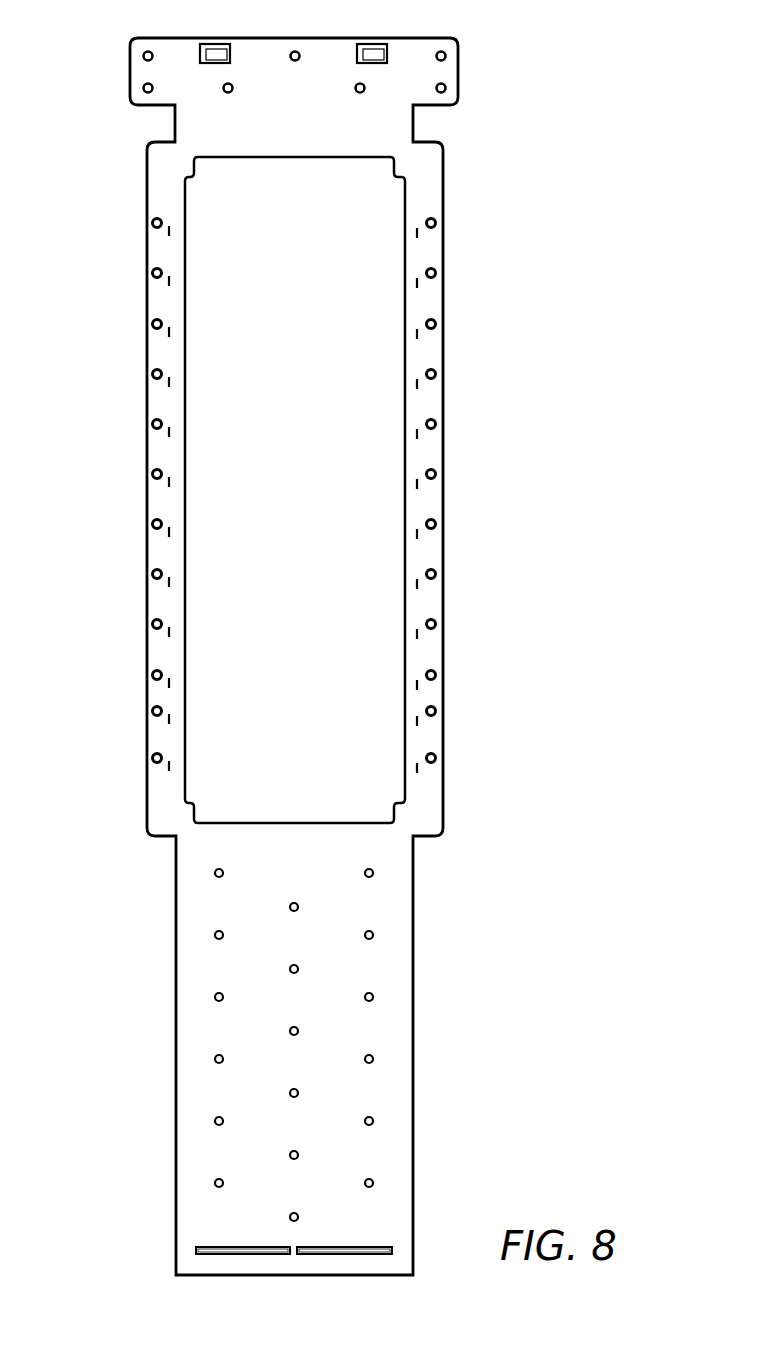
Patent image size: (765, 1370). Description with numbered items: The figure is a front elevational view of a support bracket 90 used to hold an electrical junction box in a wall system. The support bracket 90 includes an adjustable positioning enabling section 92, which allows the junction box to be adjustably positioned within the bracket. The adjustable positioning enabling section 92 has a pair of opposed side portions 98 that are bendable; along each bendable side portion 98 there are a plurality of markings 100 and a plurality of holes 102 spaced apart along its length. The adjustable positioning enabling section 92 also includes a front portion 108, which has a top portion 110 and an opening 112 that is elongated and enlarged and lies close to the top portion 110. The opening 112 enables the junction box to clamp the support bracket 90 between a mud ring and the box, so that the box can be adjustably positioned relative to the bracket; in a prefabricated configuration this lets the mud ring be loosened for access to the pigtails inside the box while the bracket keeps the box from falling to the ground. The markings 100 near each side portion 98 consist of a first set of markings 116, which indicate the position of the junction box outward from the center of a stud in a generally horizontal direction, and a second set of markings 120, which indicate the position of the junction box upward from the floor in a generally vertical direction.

The support bracket 90 is at (486, 80).
The adjustable positioning enabling section 92 is at (423, 815).
The side portions 98 is at (158, 187).
The markings 100 is at (157, 407).
The holes 102 is at (157, 374).
The front portion 108 is at (215, 970).
The top portion 110 is at (217, 133).
The opening 112 is at (340, 478).
The first set of markings 116 is at (160, 698).
The second set of markings 120 is at (157, 648).